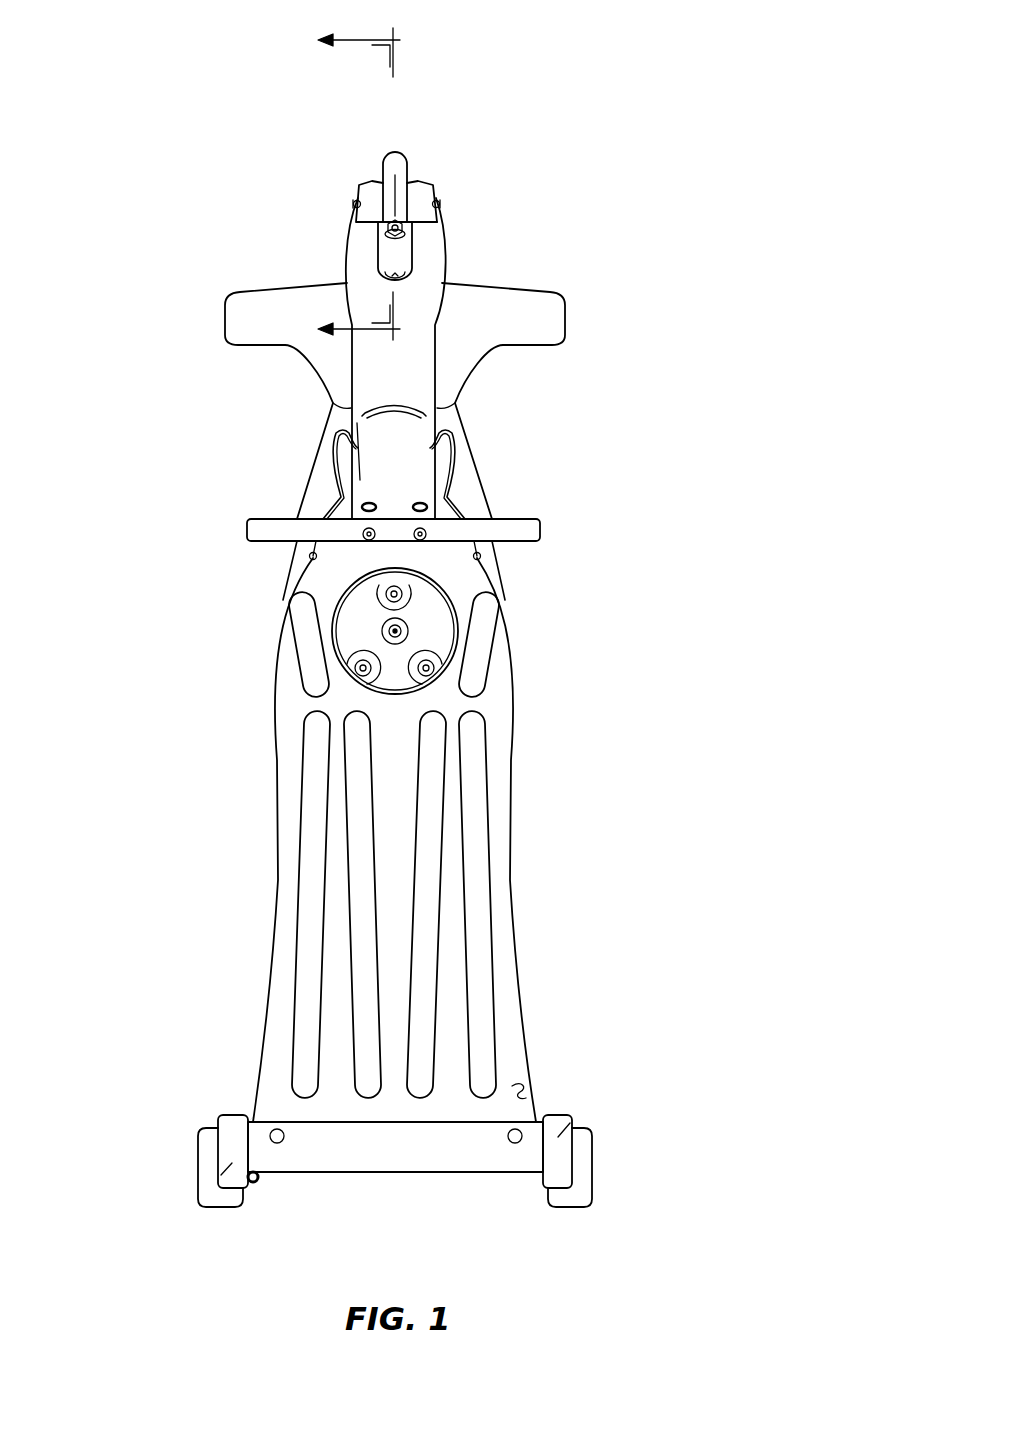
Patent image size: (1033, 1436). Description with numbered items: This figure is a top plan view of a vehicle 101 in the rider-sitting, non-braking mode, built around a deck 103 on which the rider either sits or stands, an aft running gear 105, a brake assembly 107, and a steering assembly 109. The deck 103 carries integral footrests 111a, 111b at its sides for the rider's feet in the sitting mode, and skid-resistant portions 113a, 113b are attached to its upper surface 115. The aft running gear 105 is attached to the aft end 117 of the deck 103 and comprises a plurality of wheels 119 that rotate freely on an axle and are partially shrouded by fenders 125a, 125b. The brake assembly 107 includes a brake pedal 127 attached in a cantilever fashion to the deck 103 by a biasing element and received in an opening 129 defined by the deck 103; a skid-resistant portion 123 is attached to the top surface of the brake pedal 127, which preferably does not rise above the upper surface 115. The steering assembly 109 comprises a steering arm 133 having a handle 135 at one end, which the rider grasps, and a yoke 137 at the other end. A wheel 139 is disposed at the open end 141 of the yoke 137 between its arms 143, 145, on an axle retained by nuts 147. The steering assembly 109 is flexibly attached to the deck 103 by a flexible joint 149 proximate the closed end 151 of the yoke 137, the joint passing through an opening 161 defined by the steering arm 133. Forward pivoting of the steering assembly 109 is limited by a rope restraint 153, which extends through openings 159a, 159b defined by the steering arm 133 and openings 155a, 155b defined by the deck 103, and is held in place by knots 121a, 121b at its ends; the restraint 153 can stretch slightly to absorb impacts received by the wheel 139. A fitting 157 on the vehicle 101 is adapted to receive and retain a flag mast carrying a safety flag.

The vehicle 101 is at (540, 82).
The deck 103 is at (508, 702).
The aft running gear 105 is at (417, 1183).
The brake assembly 107 is at (449, 616).
The steering assembly 109 is at (338, 244).
The footrest 111a is at (247, 318).
The footrest 111b is at (540, 326).
The skid-resistant portion 113a is at (302, 627).
The skid-resistant portion 113b is at (317, 779).
The upper surface 115 is at (522, 1092).
The aft end 117 is at (251, 1118).
The wheels 119 is at (205, 1141).
The knot 121a is at (309, 557).
The knot 121b is at (481, 556).
The skid-resistant portion 123 is at (433, 767).
The fender 125a is at (232, 1163).
The fender 125b is at (560, 1136).
The brake pedal 127 is at (424, 628).
The opening 129 is at (383, 678).
The steering arm 133 is at (430, 328).
The handle 135 is at (262, 529).
The yoke 137 is at (427, 213).
The wheel 139 is at (390, 170).
The open end 141 is at (408, 177).
The arm 143 is at (373, 193).
The arm 145 is at (420, 193).
The nuts 147 is at (355, 203).
The flexible joint 149 is at (380, 259).
The closed end 151 is at (415, 227).
The restraint 153 is at (338, 463).
The opening 155a is at (293, 583).
The opening 155b is at (481, 557).
The fitting 157 is at (259, 1178).
The opening 159a is at (333, 405).
The opening 159b is at (457, 400).
The opening 161 is at (408, 247).